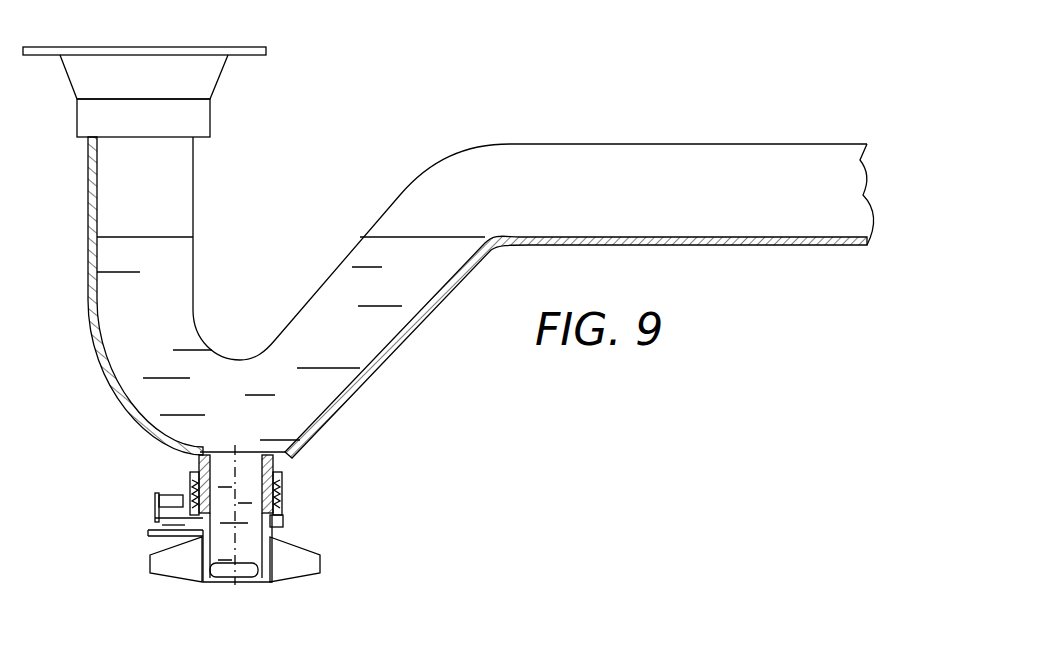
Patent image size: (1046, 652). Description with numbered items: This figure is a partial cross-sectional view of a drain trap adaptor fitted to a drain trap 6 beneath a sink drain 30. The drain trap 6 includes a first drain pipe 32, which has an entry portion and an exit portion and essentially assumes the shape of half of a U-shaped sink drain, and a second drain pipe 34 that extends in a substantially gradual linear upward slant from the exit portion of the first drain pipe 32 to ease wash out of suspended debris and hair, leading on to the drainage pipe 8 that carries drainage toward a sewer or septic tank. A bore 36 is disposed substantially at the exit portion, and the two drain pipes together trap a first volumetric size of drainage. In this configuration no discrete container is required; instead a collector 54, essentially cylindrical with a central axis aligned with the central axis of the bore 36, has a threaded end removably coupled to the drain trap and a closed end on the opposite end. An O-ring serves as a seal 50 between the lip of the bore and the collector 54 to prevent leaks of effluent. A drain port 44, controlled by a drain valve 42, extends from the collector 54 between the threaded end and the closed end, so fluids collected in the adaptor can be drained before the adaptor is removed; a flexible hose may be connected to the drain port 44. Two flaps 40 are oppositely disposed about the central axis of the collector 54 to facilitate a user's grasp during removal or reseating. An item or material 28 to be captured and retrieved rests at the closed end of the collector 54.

The sink drain 30 is at (140, 47).
The drainage pipe leading to sewer or septic tank 8 is at (680, 144).
The drain trap 6 is at (302, 210).
The first drain pipe 32 is at (195, 273).
The second drain pipe 34 is at (335, 268).
The bore 36 is at (262, 463).
The seal 50 is at (283, 516).
The collector 54 is at (283, 524).
The drain valve 42 is at (157, 493).
The drain port 44 is at (152, 514).
The flap 40 is at (150, 560).
The item or material to be captured and retrieved 28 is at (228, 576).